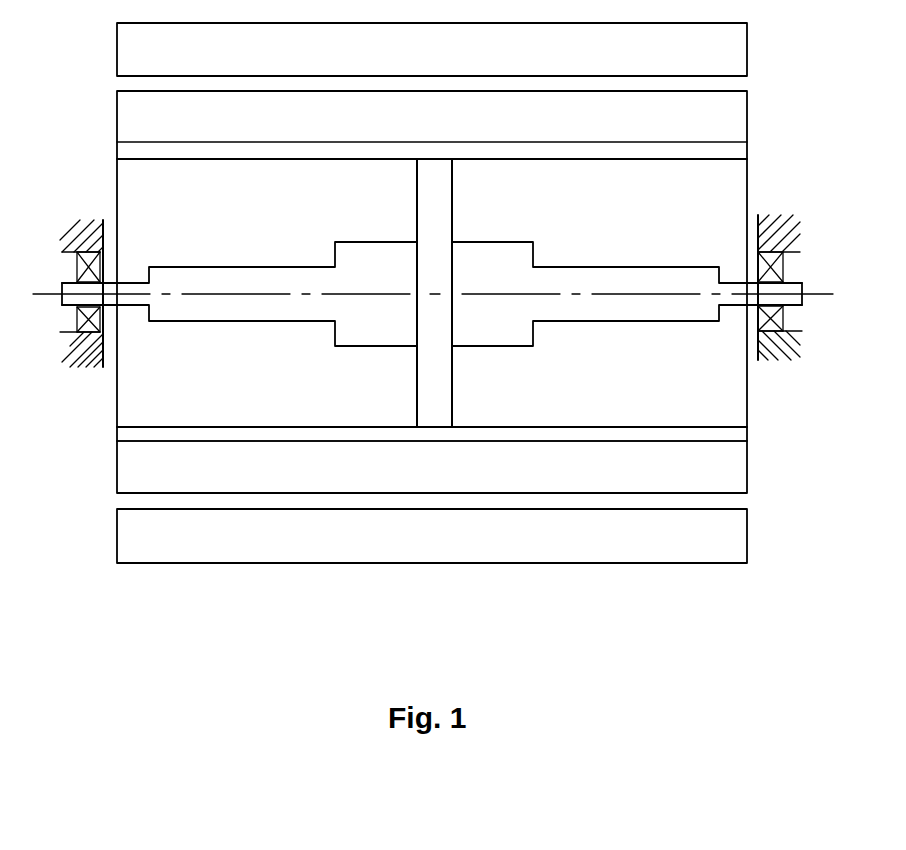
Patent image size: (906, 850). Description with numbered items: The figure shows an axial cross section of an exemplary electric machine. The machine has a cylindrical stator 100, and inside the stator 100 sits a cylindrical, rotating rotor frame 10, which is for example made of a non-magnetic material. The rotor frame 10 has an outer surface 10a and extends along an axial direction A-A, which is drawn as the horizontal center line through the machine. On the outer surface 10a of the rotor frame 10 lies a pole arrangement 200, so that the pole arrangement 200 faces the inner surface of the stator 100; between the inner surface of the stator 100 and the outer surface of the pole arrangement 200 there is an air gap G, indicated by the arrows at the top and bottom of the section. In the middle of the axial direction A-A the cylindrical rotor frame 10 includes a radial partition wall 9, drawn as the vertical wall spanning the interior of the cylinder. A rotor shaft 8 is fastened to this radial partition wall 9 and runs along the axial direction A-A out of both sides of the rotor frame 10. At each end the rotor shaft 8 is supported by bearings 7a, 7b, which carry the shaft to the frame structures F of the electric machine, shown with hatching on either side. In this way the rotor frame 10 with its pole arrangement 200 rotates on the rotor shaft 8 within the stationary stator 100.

The stator 100 is at (737, 34).
The pole arrangement 200 is at (740, 128).
The rotor frame 10 is at (236, 438).
The outer surface 10a is at (580, 132).
The radial partition wall 9 is at (440, 393).
The rotor shaft 8 is at (237, 283).
The bearing 7a is at (80, 318).
The bearing 7b is at (784, 320).
The axial direction A is at (42, 290).
The frame structure F is at (431, 289).
The air gap G is at (752, 78).